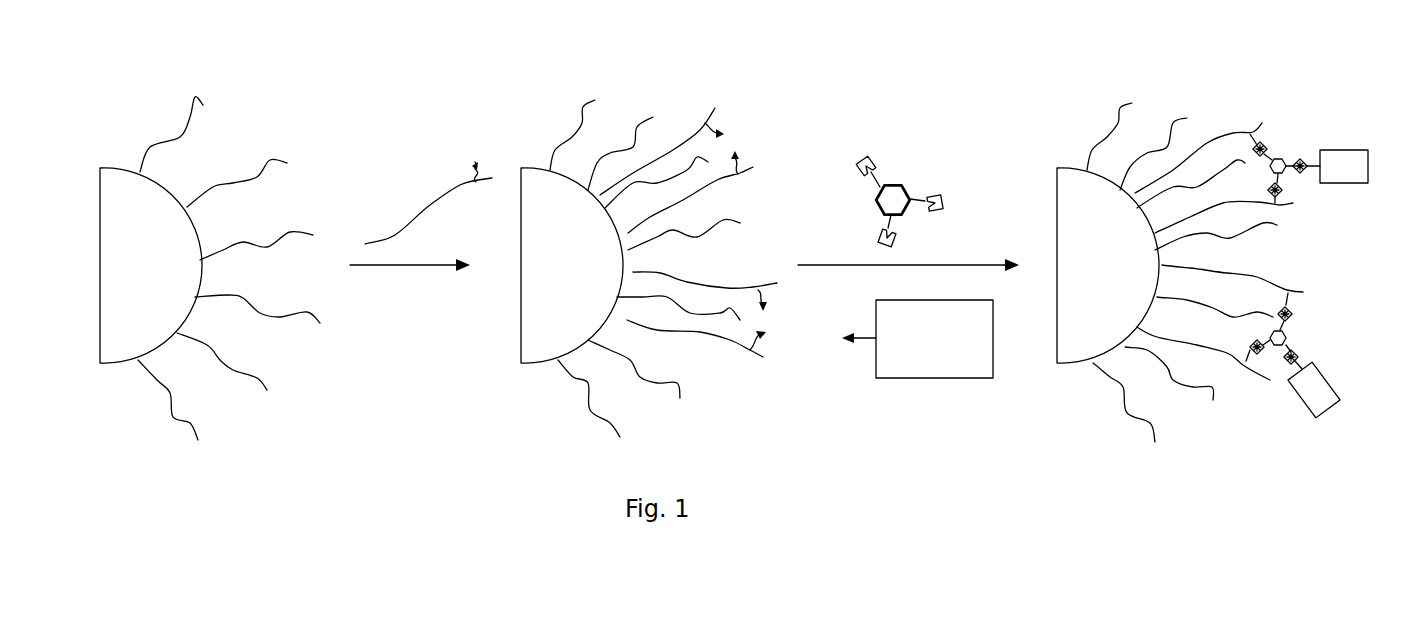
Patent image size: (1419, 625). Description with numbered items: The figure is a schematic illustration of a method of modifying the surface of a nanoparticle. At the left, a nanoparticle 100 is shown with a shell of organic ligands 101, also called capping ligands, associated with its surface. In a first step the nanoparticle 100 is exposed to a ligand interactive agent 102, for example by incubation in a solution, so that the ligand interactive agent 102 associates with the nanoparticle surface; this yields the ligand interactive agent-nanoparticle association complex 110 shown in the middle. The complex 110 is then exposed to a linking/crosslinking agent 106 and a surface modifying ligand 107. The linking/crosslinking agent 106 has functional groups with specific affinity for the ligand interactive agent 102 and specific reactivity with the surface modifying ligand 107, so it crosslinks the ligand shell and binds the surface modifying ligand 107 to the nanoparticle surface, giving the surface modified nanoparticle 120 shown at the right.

The nanoparticle 100 is at (210, 299).
The organic ligand 101 is at (195, 95).
The ligand interactive agent 102 is at (400, 178).
The linking/crosslinking agent 106 is at (907, 165).
The surface modifying ligand 107 is at (975, 387).
The ligand interactive agent-nanoparticle association complex 110 is at (649, 268).
The conjugated nanoparticle 120 is at (1212, 272).